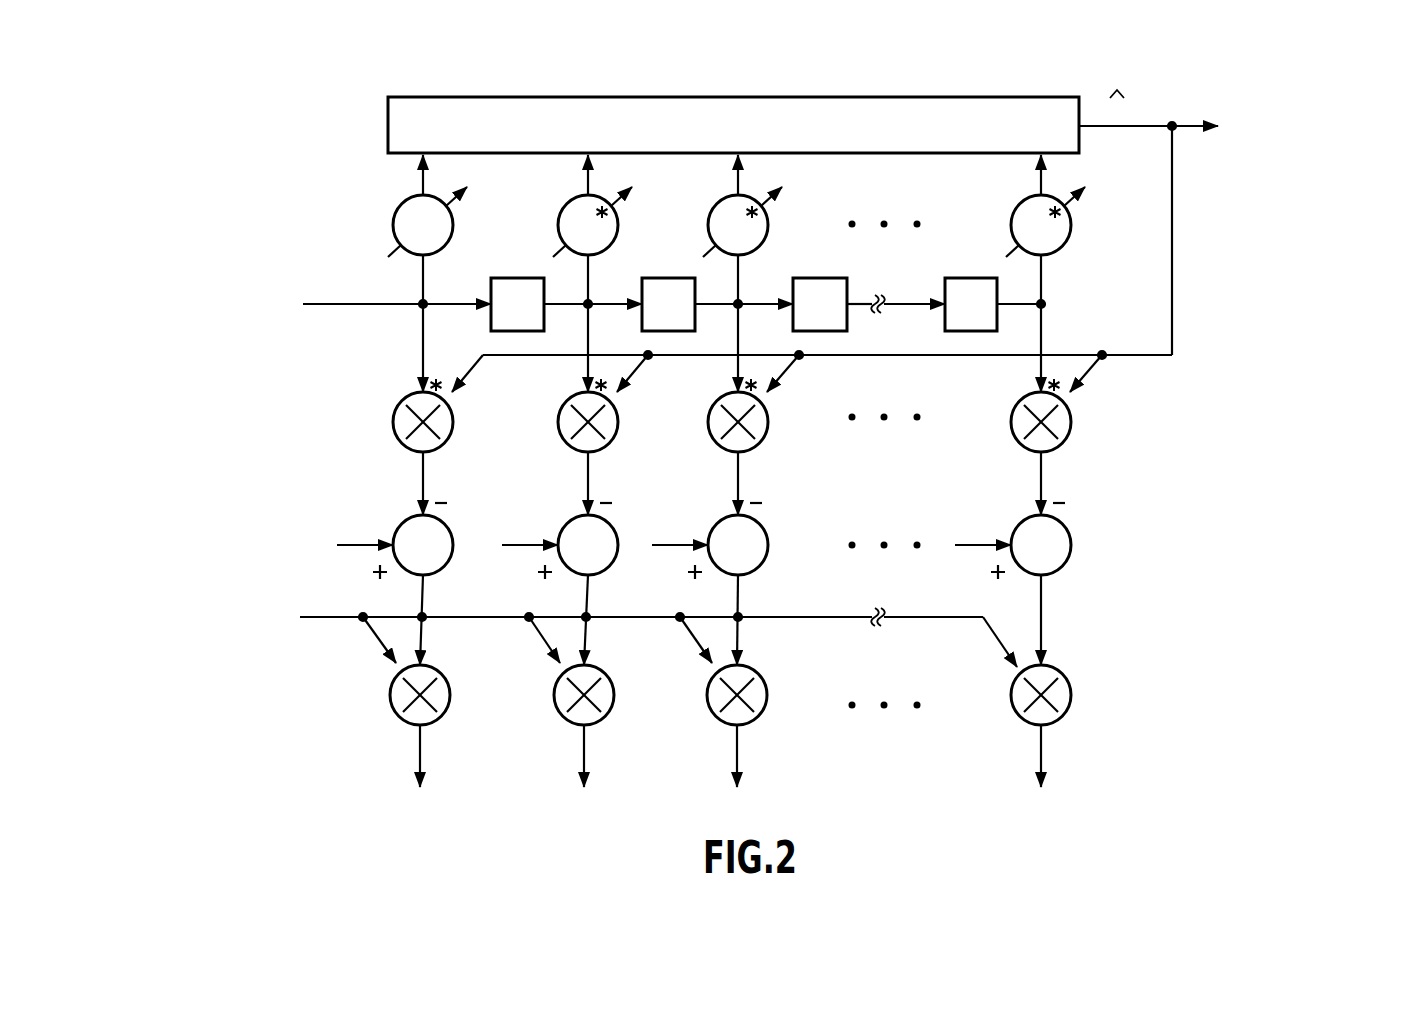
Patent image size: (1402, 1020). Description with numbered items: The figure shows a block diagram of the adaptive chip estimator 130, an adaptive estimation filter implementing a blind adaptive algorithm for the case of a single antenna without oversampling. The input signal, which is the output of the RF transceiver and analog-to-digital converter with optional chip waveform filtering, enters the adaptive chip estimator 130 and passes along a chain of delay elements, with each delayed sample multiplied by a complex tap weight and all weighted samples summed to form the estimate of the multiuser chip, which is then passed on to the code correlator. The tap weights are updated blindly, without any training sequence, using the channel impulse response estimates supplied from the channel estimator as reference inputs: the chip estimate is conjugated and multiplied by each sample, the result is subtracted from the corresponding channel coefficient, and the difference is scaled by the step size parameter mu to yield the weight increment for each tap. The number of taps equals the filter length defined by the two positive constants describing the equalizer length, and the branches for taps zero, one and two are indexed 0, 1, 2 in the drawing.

The adaptive chip estimator 130 is at (320, 75).
The tap 0 weight update branch 0 is at (409, 471).
The tap 1 weight update branch 1 is at (576, 471).
The tap 2 weight update branch 2 is at (726, 471).